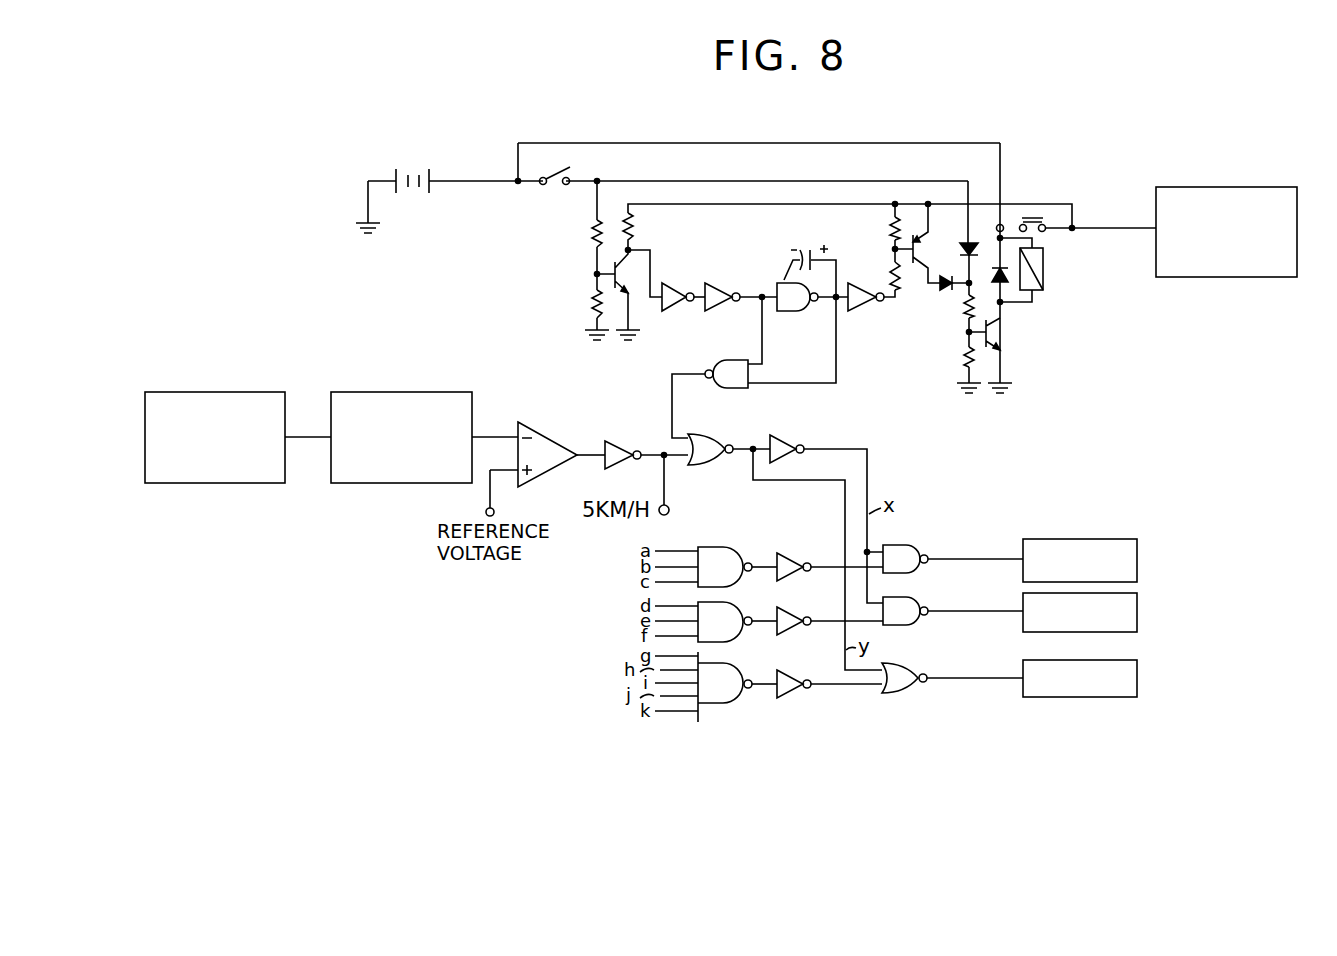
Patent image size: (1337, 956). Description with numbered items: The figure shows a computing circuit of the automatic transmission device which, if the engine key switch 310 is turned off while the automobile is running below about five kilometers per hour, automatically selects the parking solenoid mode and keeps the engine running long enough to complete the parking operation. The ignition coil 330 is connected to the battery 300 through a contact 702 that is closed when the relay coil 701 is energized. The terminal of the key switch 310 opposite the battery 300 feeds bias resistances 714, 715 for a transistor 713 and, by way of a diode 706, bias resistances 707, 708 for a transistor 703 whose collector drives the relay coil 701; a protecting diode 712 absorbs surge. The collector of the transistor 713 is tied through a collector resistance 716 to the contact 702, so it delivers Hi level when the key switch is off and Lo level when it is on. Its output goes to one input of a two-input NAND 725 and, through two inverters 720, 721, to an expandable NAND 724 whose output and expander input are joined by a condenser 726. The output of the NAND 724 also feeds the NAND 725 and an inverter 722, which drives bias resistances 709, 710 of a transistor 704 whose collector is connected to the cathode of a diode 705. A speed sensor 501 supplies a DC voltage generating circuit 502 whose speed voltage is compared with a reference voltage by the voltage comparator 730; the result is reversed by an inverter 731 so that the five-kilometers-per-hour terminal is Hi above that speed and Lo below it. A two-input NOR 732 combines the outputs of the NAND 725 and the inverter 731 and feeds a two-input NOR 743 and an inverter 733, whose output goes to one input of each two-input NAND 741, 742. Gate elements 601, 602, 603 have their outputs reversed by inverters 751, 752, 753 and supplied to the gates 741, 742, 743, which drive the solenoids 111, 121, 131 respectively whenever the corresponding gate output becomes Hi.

The battery 300 is at (415, 196).
The engine key switch 310 is at (556, 190).
The ignition coil 330 is at (1230, 187).
The speed sensor 501 is at (222, 392).
The DC voltage generating circuit 502 is at (418, 392).
The gate element 601 is at (733, 548).
The gate element 602 is at (735, 643).
The gate element 603 is at (726, 705).
The relay coil 701 is at (1046, 266).
The relay contact 702 is at (1032, 216).
The transistor 703 is at (1000, 334).
The transistor 704 is at (912, 266).
The diode 705 is at (946, 292).
The diode 706 is at (972, 240).
The bias resistance 707 is at (976, 308).
The bias resistance 708 is at (962, 356).
The bias resistance 709 is at (889, 228).
The bias resistance 710 is at (888, 279).
The protecting diode 712 is at (992, 273).
The transistor 713 is at (634, 272).
The bias resistance 714 is at (591, 233).
The bias resistance 715 is at (586, 302).
The collector resistance 716 is at (636, 225).
The inverter 720 is at (677, 310).
The inverter 721 is at (720, 310).
The inverter 722 is at (864, 310).
The expandable NAND 724 is at (790, 312).
The two-input NAND 725 is at (715, 390).
The condenser 726 is at (806, 256).
The voltage comparator 730 is at (553, 435).
The inverter 731 is at (618, 442).
The two-input NOR 732 is at (712, 468).
The inverter 733 is at (776, 434).
The two-input NAND 741 is at (906, 545).
The two-input NAND 742 is at (910, 597).
The two-input NOR 743 is at (908, 665).
The inverter 751 is at (792, 556).
The inverter 752 is at (788, 609).
The inverter 753 is at (794, 699).
The solenoid 111 is at (1139, 561).
The solenoid 121 is at (1139, 611).
The solenoid 131 is at (1139, 678).